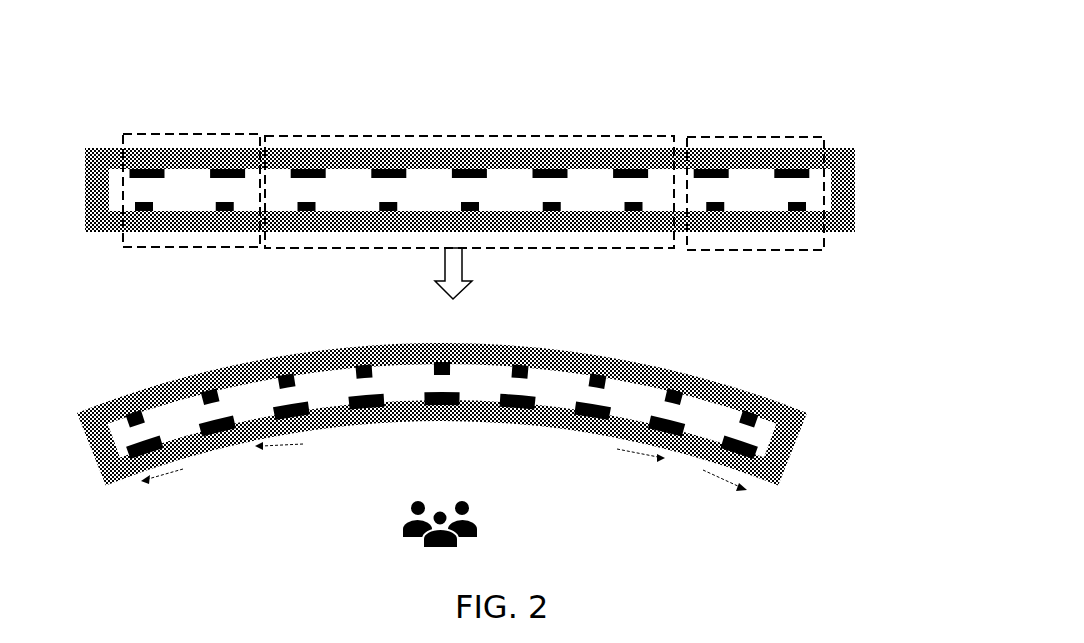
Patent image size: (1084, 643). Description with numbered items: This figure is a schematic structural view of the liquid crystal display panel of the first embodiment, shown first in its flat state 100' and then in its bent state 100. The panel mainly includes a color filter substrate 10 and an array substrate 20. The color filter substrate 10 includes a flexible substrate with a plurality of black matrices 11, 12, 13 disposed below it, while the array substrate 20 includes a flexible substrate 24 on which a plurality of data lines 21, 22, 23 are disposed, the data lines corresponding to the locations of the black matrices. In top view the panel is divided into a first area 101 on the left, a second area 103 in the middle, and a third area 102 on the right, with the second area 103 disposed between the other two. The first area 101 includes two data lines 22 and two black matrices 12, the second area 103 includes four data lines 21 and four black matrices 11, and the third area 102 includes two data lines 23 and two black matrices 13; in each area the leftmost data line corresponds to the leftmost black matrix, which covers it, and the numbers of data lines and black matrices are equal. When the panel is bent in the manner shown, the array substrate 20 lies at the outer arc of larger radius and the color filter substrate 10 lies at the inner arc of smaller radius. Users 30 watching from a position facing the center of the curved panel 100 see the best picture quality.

The color filter substrate 10 is at (857, 152).
The array substrate 20 is at (855, 223).
The black matrix 11 is at (552, 150).
The data line 21 is at (535, 215).
The black matrix 12 is at (123, 157).
The black matrix 13 is at (802, 150).
The data line 22 is at (132, 230).
The data line 23 is at (702, 232).
The flexible substrate 24 is at (850, 230).
The first area 101 is at (192, 133).
The third area 102 is at (740, 133).
The second area 103 is at (370, 131).
The display panel in flat state 100' is at (493, 265).
The display panel in curved state 100 is at (442, 390).
The users 30 is at (468, 503).